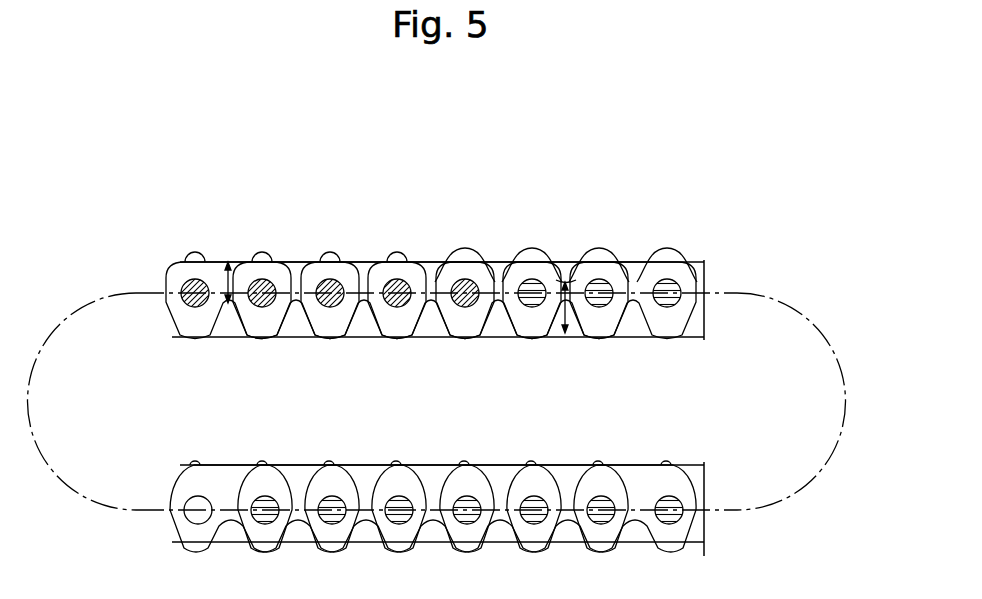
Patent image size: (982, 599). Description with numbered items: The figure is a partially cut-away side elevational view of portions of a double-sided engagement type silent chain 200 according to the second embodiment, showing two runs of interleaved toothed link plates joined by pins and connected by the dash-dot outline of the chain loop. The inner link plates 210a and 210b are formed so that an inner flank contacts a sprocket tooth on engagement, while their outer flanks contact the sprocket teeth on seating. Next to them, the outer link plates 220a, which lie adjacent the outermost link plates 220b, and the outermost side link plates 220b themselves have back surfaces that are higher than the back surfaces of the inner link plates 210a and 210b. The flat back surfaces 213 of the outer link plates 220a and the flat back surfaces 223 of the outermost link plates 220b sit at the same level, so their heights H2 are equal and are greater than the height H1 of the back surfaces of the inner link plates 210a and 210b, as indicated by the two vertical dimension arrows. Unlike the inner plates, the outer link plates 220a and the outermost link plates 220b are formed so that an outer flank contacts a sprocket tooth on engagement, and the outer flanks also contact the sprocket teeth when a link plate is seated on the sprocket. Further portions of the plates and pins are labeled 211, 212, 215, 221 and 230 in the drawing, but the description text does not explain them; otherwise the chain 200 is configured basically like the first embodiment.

The silent chain 200 is at (598, 234).
The inner link plate 210a is at (217, 262).
The inner link plate 210b is at (420, 262).
The pin hole 211 is at (332, 340).
The connecting pin 212 is at (198, 302).
The back surface 213 is at (500, 337).
The back portion 215 is at (576, 278).
The outer link plate 220a is at (222, 338).
The outermost link plate 220b is at (287, 338).
The guide plate head 221 is at (467, 250).
The back surface 223 is at (578, 337).
The bush 230 is at (606, 275).
The height of the back surfaces of the inner link plates H1 is at (230, 261).
The height of the back surfaces of the outer link plates H2 is at (565, 333).